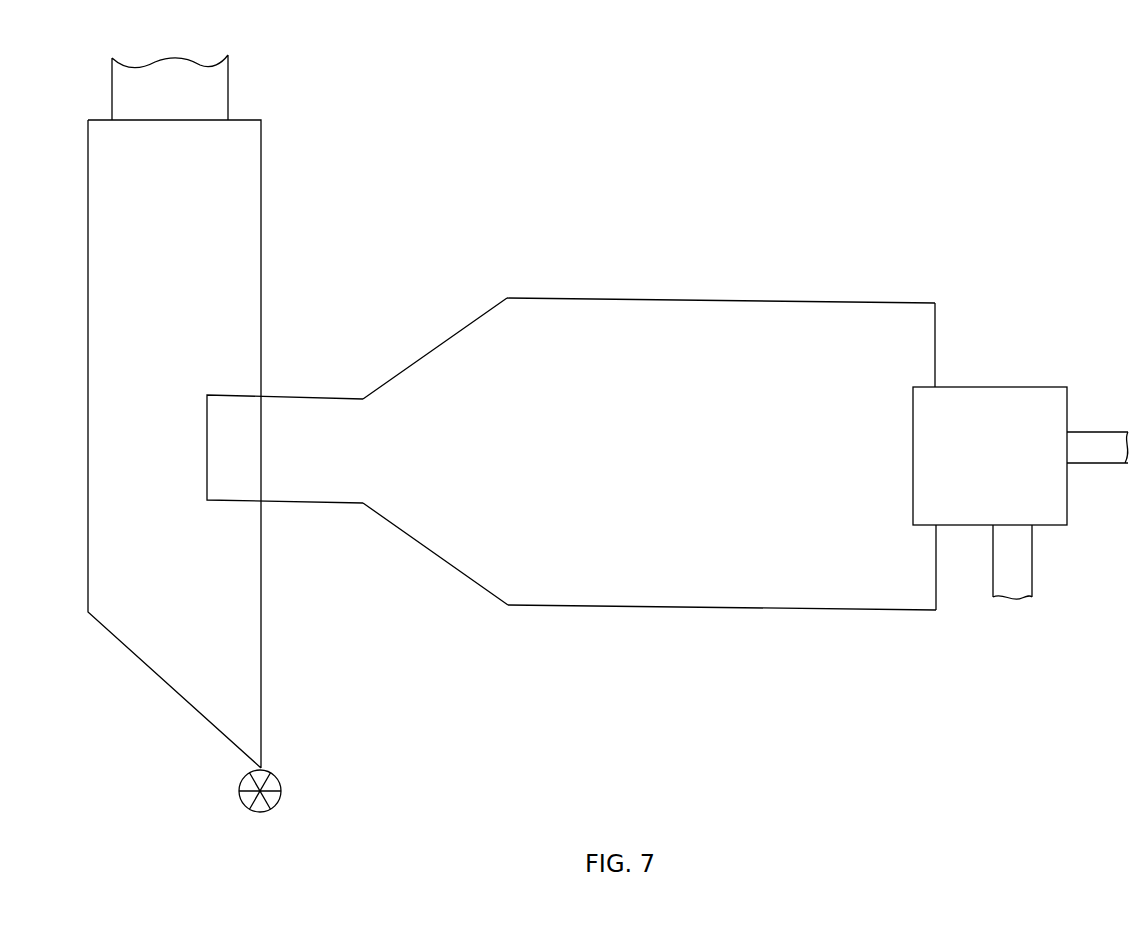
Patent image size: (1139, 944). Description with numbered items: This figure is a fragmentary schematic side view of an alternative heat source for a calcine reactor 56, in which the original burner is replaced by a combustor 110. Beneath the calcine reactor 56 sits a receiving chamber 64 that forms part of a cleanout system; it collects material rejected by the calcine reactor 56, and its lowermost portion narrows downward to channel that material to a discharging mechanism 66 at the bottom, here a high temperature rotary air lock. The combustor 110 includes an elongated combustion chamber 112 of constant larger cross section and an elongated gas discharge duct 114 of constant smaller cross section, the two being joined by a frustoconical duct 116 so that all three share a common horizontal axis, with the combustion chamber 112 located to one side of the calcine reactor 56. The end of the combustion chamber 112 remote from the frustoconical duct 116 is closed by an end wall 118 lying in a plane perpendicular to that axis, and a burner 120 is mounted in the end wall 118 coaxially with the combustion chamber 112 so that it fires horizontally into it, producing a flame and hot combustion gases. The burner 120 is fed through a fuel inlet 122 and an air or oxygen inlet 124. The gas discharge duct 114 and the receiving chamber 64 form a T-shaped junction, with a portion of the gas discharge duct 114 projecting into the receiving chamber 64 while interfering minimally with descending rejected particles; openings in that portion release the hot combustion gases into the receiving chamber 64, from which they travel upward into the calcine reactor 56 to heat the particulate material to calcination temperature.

The calcine reactor 56 is at (228, 78).
The receiving chamber 64 is at (261, 213).
The discharging mechanism 66 is at (276, 775).
The combustor 110 is at (893, 163).
The combustion chamber 112 is at (764, 293).
The gas discharge duct 114 is at (313, 503).
The frustoconical duct 116 is at (410, 363).
The end wall 118 is at (936, 320).
The burner 120 is at (1035, 386).
The fuel inlet 122 is at (1033, 575).
The air or oxygen inlet 124 is at (1100, 467).